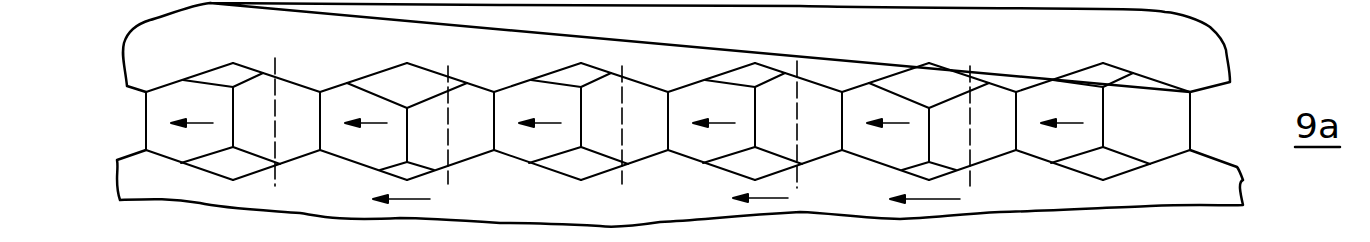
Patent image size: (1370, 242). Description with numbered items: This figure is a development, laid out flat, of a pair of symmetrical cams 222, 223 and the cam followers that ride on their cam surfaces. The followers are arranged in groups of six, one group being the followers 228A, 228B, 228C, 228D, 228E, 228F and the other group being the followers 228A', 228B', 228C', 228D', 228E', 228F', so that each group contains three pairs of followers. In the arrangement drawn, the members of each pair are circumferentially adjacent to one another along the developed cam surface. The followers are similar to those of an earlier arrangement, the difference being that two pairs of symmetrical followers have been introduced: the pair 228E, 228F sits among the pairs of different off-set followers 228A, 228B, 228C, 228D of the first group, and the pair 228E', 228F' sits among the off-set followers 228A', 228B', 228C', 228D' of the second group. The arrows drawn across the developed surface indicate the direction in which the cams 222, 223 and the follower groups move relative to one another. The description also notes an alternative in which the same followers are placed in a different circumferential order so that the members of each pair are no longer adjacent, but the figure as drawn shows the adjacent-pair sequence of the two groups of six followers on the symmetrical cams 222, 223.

The symmetrical cam 222 is at (1228, 55).
The symmetrical cam 223 is at (598, 220).
The cam follower 228A is at (276, 97).
The cam follower 228B is at (366, 96).
The cam follower 228C is at (454, 96).
The cam follower 228D is at (540, 97).
The symmetrical cam follower 228E is at (624, 96).
The symmetrical cam follower 228F is at (711, 96).
The cam follower 228A' is at (798, 94).
The cam follower 228B' is at (885, 98).
The cam follower 228C' is at (972, 94).
The cam follower 228D' is at (1059, 99).
The symmetrical cam follower 228E' is at (1146, 99).
The symmetrical cam follower 228F' is at (185, 104).